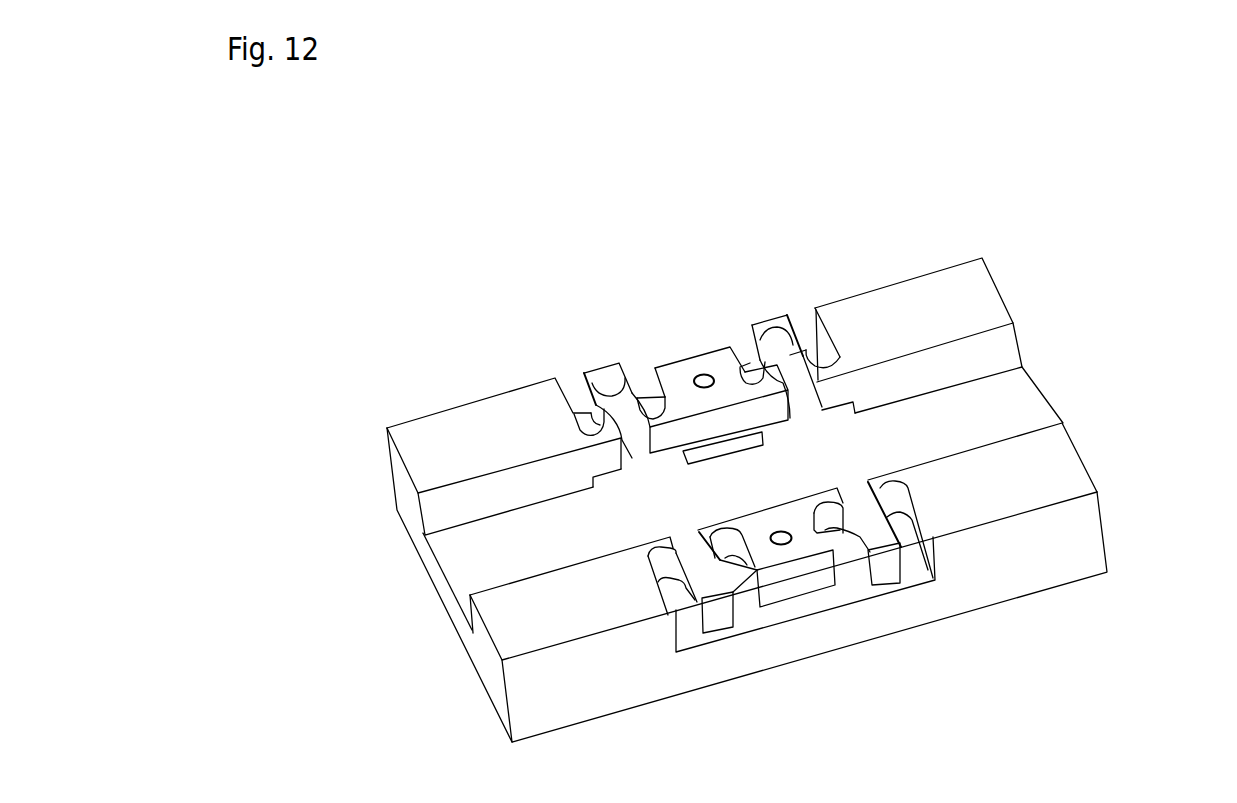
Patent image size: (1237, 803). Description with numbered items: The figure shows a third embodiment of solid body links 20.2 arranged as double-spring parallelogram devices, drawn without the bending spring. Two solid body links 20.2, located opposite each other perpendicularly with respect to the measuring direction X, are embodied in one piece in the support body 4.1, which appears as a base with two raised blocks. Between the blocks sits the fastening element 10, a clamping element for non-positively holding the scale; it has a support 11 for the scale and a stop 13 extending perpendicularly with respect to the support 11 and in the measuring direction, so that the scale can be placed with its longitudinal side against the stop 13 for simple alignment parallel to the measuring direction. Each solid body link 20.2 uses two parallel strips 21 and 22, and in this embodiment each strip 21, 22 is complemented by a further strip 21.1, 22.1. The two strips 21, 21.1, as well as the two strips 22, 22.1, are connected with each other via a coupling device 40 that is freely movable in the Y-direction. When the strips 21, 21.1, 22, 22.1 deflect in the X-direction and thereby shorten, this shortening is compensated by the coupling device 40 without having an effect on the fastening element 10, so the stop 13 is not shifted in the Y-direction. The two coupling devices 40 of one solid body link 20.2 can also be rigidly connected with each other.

The support body 4.1 is at (985, 312).
The solid body link 20.2 is at (848, 290).
The fastening element 10 is at (682, 348).
The support 11 is at (730, 445).
The stop 13 is at (667, 440).
The strip 21 is at (590, 398).
The further strip 21.1 is at (627, 387).
The strip 22 is at (802, 342).
The further strip 22.1 is at (765, 358).
The coupling device 40 is at (593, 373).